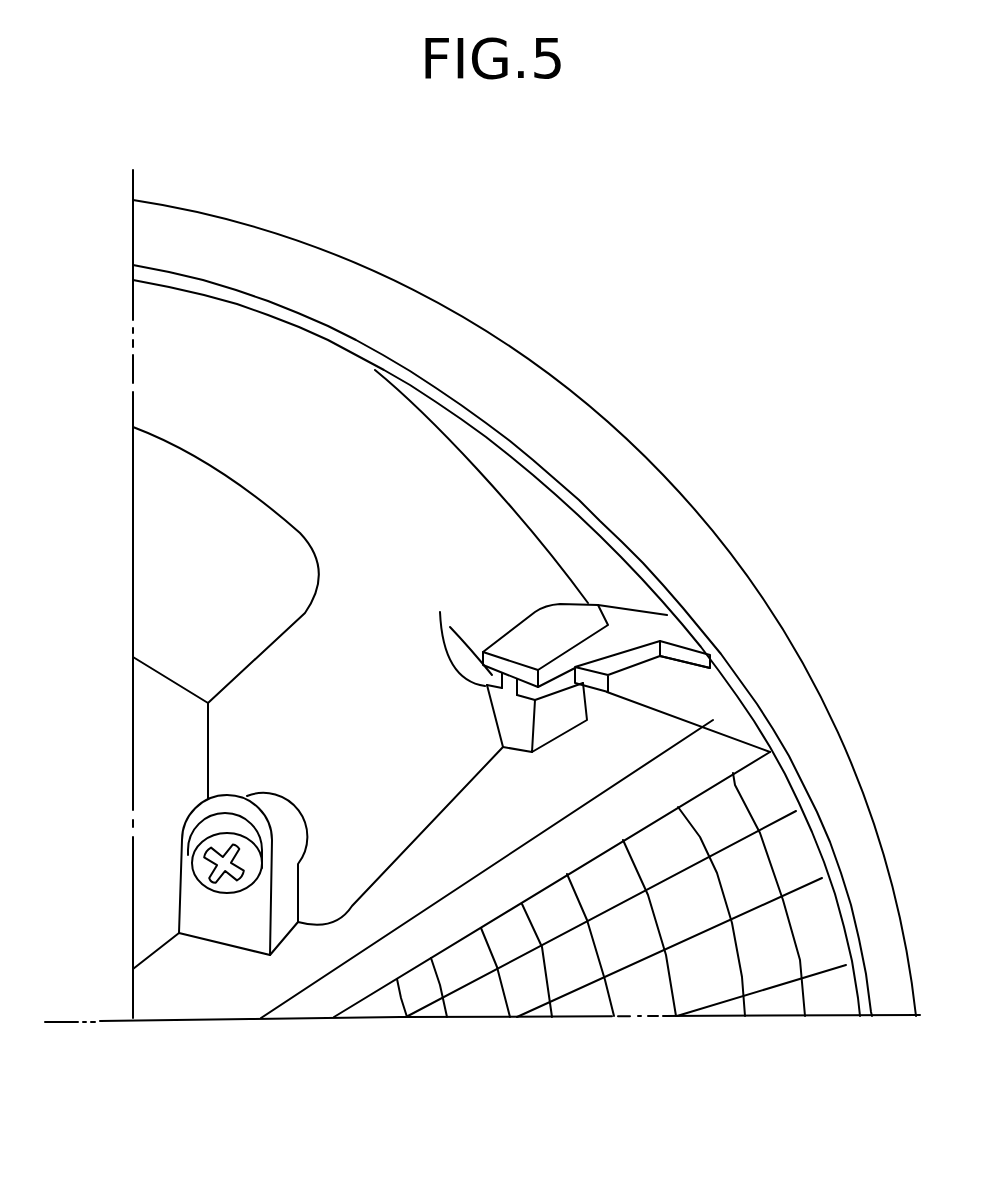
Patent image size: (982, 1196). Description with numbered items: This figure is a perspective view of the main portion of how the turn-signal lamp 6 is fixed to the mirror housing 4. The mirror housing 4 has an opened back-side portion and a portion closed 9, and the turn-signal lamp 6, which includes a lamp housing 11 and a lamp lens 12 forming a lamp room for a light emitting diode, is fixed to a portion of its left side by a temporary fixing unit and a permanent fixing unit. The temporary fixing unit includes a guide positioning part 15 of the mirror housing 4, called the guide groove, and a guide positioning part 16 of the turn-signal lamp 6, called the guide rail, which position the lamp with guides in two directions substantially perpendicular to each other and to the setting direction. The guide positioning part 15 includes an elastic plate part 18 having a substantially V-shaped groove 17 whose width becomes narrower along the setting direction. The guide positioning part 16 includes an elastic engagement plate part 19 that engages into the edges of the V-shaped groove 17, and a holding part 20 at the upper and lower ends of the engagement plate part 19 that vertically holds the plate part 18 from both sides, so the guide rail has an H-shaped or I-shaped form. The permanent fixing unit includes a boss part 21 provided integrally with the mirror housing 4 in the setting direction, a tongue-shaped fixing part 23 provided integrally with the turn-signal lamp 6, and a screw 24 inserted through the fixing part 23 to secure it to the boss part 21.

The mirror housing 4 is at (374, 270).
The turn-signal lamp 6 is at (393, 867).
The portion closed 9 is at (380, 416).
The lamp housing 11 is at (667, 728).
The lamp lens 12 is at (773, 783).
The guide positioning part 15 is at (599, 605).
The guide positioning part 16 is at (516, 617).
The V-shaped groove 17 is at (560, 683).
The plate part 18 is at (623, 597).
The engagement plate part 19 is at (503, 680).
The holding part 20 is at (458, 636).
The boss part 21 is at (288, 800).
The fixing part 23 is at (230, 803).
The screw 24 is at (193, 842).